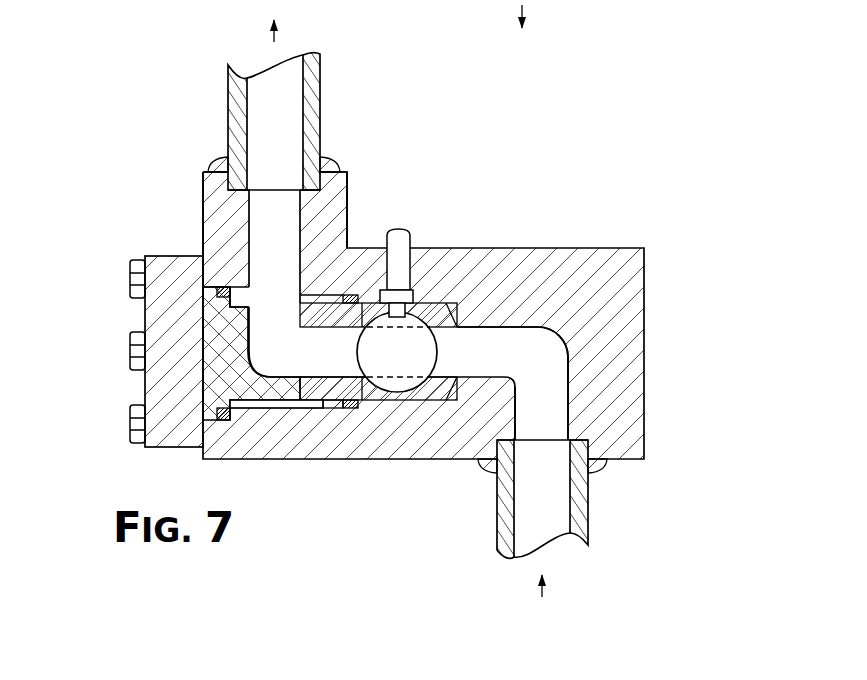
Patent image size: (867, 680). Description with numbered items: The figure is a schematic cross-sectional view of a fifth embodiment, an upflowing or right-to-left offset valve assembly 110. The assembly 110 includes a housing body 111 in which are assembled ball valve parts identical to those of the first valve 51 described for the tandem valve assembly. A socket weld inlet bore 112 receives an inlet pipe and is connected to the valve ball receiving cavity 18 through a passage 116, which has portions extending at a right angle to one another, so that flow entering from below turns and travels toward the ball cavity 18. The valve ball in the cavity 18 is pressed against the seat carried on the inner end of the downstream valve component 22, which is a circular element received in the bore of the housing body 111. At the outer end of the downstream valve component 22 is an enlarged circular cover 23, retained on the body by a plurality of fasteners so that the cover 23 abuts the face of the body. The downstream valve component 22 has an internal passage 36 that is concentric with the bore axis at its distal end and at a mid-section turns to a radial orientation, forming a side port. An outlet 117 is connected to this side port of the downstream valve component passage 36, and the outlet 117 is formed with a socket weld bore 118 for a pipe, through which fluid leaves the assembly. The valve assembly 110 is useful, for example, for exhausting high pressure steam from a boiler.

The offset valve assembly 110 is at (542, 204).
The housing body 111 is at (405, 459).
The socket weld inlet bore 112 is at (567, 414).
The passage 116 is at (512, 330).
The outlet 117 is at (302, 228).
The socket weld bore 118 is at (316, 180).
The valve ball receiving cavity 18 is at (455, 300).
The first valve 51 is at (361, 426).
The downstream valve component 22 is at (277, 402).
The internal passage 36 is at (247, 337).
The cover 23 is at (144, 314).